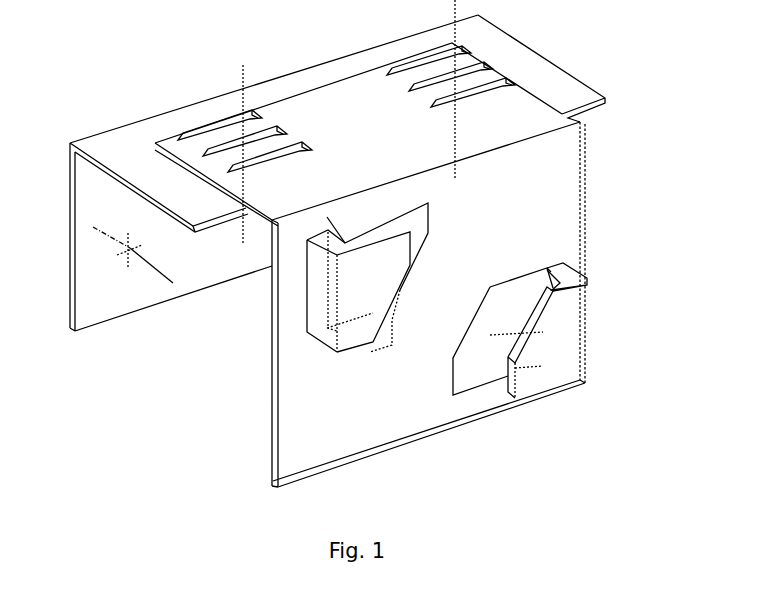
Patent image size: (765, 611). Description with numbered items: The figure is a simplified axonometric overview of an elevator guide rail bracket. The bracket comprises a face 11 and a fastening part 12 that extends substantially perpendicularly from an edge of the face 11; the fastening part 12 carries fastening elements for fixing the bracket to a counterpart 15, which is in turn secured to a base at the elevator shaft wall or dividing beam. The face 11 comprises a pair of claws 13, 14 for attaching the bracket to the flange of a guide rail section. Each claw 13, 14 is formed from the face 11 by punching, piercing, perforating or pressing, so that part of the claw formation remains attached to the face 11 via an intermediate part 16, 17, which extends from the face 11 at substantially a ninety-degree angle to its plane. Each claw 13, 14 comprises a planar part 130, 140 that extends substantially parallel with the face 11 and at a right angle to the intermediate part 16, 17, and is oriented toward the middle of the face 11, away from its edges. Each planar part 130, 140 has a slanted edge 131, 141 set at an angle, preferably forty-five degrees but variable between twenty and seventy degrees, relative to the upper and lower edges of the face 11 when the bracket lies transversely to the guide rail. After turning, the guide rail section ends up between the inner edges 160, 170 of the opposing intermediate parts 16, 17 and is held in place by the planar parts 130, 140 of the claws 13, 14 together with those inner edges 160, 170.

The face 11 is at (557, 188).
The fastening part 12 is at (530, 124).
The claw 13 is at (337, 342).
The planar part 130 is at (328, 317).
The slanted edge 131 is at (393, 342).
The claw 14 is at (565, 380).
The planar part 140 is at (543, 268).
The slanted edge 141 is at (488, 337).
The counterpart 15 is at (525, 60).
The intermediate part 16 is at (325, 216).
The inner side of the intermediate part 160 is at (335, 225).
The intermediate part 17 is at (590, 268).
The inner side of the intermediate part 170 is at (552, 267).